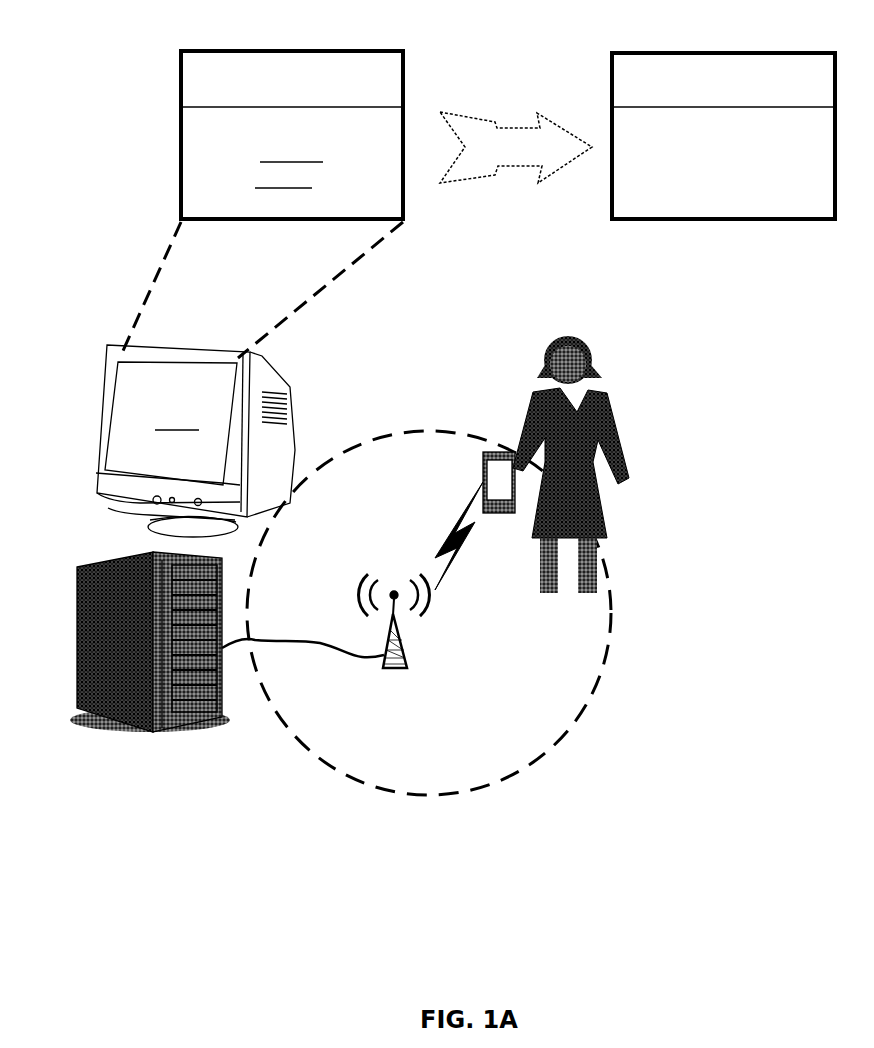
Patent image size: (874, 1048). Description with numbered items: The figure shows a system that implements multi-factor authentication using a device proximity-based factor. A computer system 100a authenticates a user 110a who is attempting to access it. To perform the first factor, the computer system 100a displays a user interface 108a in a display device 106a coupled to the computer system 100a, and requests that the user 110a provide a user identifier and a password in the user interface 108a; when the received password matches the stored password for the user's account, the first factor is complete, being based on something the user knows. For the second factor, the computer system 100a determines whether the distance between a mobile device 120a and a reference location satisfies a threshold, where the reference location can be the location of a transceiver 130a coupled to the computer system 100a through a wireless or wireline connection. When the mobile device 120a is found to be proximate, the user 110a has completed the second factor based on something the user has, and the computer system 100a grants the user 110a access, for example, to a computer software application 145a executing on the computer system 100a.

The computer system 100a is at (90, 573).
The display device 106a is at (195, 441).
The user interface 108a is at (394, 51).
The user 110a is at (575, 343).
The mobile device 120a is at (486, 450).
The transceiver 130a is at (402, 576).
The computer software application 145a is at (696, 52).